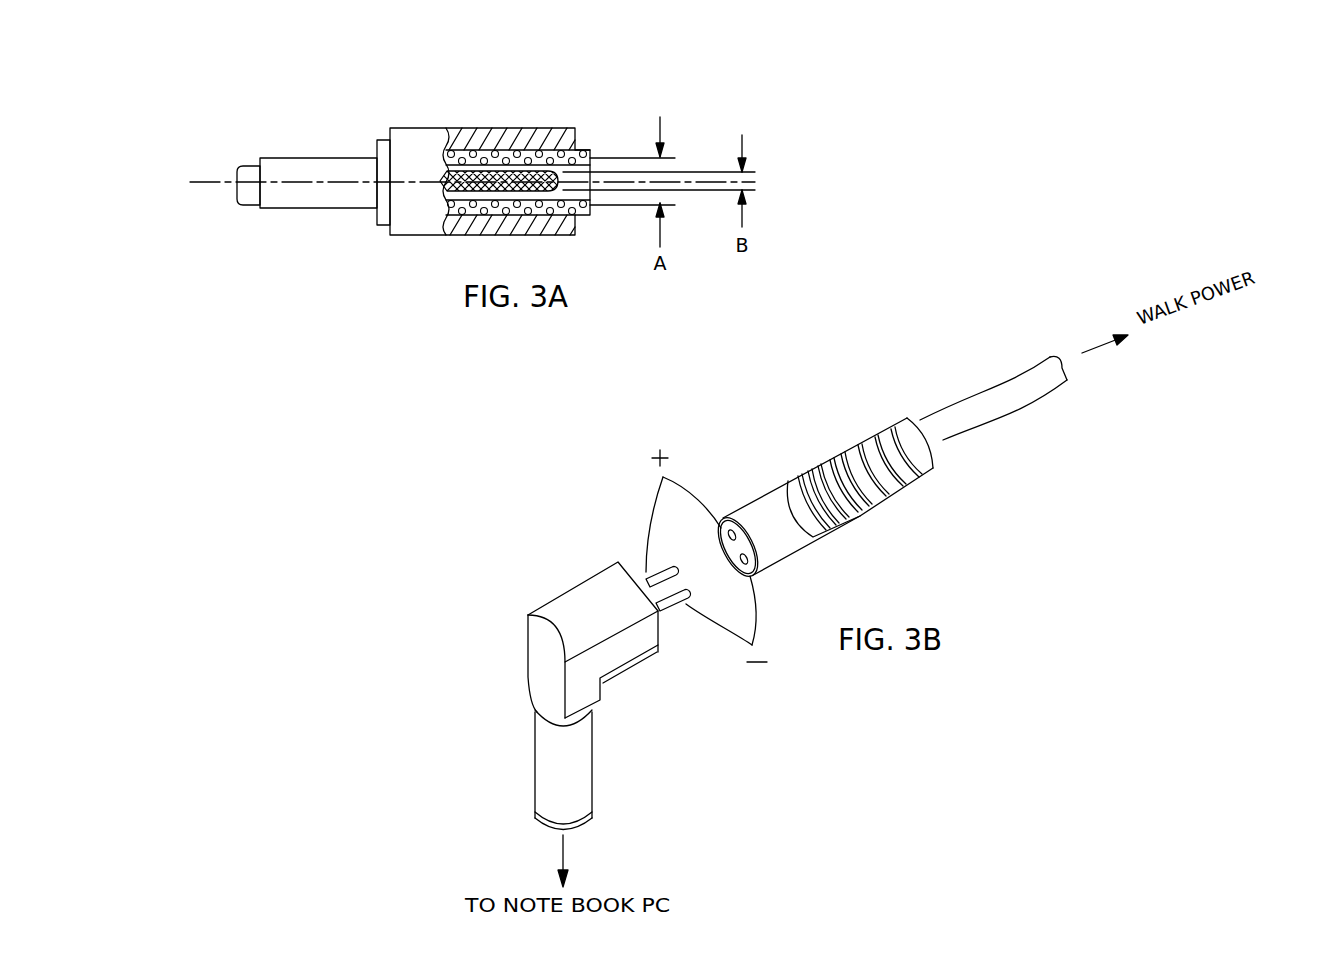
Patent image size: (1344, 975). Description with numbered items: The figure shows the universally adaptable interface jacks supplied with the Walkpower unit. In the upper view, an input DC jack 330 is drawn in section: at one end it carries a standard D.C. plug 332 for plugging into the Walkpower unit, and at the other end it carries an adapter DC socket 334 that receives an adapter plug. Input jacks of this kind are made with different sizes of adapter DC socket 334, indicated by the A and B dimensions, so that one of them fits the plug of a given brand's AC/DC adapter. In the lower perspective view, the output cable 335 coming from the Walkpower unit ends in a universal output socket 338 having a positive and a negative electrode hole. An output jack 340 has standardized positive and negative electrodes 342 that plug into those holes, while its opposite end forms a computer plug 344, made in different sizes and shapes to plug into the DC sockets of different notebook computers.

In FIG. 3A, the input DC jack 330 is at (543, 100).
In FIG. 3A, the standard D.C. plug 332 is at (237, 172).
In FIG. 3A, the adapter DC socket 334 is at (787, 173).
In FIG. 3B, the output cable 335 is at (995, 385).
In FIG. 3B, the universal output socket 338 is at (762, 495).
In FIG. 3B, the output jack 340 is at (482, 568).
In FIG. 3B, the positive and negative electrodes 342 is at (650, 566).
In FIG. 3B, the computer plug 344 is at (537, 740).